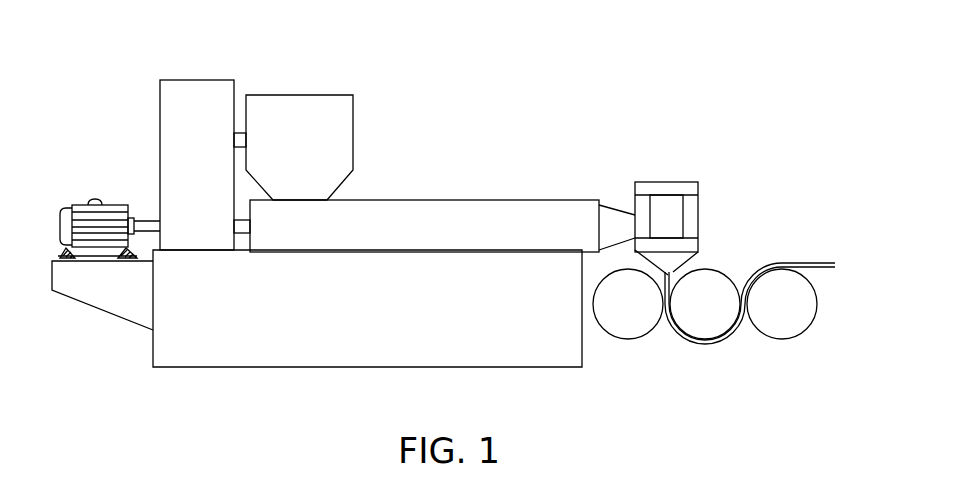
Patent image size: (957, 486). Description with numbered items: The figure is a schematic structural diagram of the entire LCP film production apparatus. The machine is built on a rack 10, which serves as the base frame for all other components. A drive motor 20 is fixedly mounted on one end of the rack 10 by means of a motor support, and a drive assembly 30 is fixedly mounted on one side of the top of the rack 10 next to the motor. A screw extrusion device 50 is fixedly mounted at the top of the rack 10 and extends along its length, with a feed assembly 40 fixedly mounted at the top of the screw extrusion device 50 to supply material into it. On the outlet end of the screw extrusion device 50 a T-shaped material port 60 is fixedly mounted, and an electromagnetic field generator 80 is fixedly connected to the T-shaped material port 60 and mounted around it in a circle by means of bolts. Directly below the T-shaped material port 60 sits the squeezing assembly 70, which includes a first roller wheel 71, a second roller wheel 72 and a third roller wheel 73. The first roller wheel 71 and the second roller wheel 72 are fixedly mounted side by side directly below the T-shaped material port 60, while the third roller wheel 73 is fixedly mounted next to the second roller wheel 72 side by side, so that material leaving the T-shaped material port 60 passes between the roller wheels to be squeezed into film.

The rack 10 is at (350, 342).
The drive motor 20 is at (88, 218).
The drive assembly 30 is at (175, 100).
The feed assembly 40 is at (300, 108).
The screw extrusion device 50 is at (490, 212).
The T-shaped material port 60 is at (693, 225).
The squeezing assembly 70 is at (793, 265).
The first roller wheel 71 is at (620, 328).
The second roller wheel 72 is at (712, 325).
The third roller wheel 73 is at (797, 320).
The electromagnetic field generator 80 is at (660, 200).